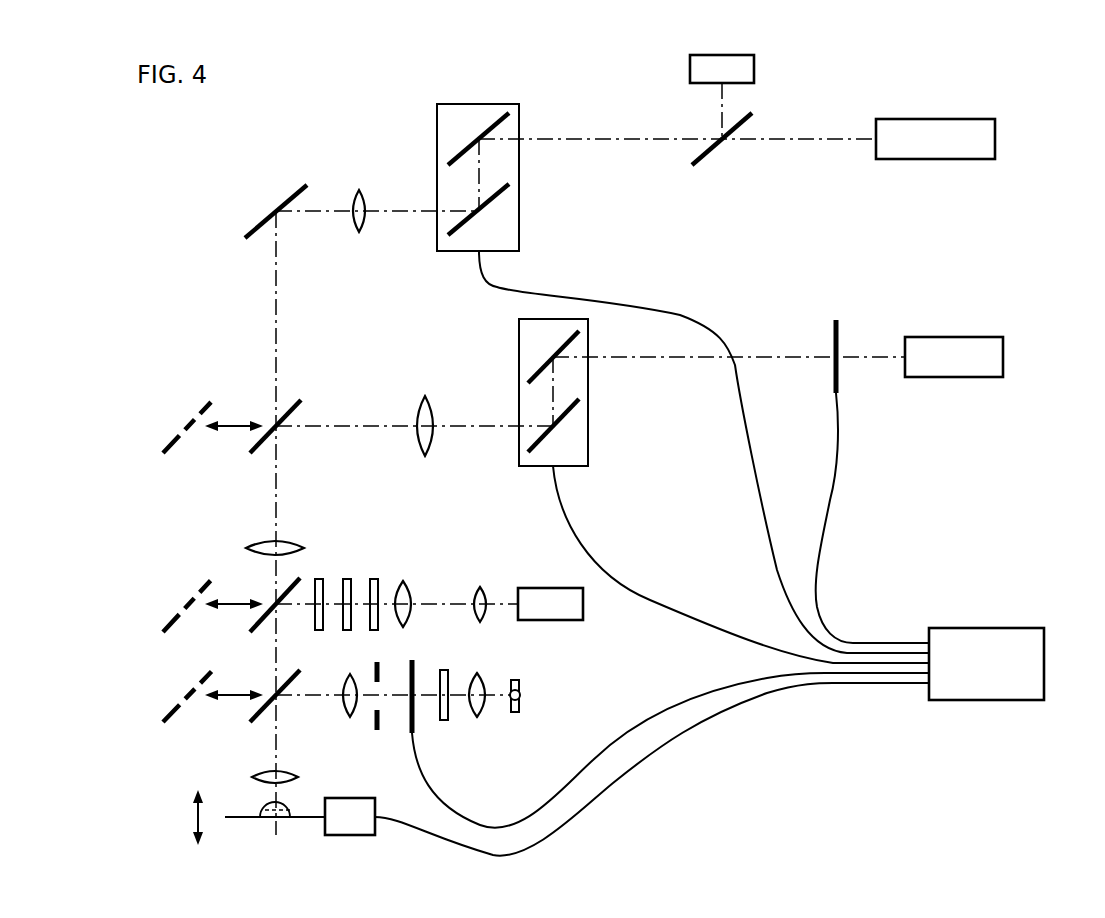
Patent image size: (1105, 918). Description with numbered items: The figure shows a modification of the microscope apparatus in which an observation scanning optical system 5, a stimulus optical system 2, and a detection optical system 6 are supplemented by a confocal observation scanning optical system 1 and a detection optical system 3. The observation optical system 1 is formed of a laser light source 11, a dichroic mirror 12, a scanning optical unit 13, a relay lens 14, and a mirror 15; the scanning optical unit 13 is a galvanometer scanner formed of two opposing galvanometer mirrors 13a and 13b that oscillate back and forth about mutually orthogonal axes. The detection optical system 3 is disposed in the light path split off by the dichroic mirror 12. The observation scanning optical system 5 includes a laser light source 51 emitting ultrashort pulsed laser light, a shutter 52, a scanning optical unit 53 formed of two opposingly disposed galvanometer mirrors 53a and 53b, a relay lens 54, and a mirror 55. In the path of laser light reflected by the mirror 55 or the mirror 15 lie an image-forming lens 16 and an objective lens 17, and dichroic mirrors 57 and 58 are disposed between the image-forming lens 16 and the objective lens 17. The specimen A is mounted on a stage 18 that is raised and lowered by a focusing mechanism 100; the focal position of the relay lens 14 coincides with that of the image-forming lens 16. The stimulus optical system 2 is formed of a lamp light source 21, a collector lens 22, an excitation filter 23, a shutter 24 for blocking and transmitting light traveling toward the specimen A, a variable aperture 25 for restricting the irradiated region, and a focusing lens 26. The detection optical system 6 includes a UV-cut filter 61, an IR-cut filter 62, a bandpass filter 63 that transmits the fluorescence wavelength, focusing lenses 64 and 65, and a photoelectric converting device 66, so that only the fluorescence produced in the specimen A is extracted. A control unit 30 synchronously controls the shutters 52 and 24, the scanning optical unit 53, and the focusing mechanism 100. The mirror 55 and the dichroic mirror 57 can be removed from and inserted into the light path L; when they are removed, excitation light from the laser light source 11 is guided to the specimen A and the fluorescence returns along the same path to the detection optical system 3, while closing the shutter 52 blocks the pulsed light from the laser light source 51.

The observation optical system 1 is at (1010, 85).
The stimulus optical system 2 is at (580, 692).
The detection optical system 3 is at (754, 67).
The observation scanning optical system 5 is at (675, 445).
The detection optical system 6 is at (450, 525).
The laser light source 11 is at (933, 119).
The dichroic mirror 12 is at (708, 157).
The scanning optical unit 13 is at (519, 176).
The galvanometer mirror 13a is at (494, 122).
The galvanometer mirror 13b is at (497, 195).
The relay lens 14 is at (358, 188).
The mirror 15 is at (256, 222).
The image-forming lens 16 is at (257, 542).
The objective lens 17 is at (253, 777).
The stage 18 is at (310, 820).
The lamp light source 21 is at (519, 683).
The collector lens 22 is at (483, 713).
The excitation filter 23 is at (447, 720).
The shutter 24 is at (415, 673).
The variable aperture 25 is at (375, 665).
The focusing lens 26 is at (342, 708).
The control unit 30 is at (985, 628).
The laser light source 51 is at (955, 337).
The shutter 52 is at (840, 322).
The scanning optical unit 53 is at (590, 392).
The galvanometer mirror 53a is at (544, 368).
The galvanometer mirror 53b is at (565, 413).
The relay lens 54 is at (427, 395).
The mirror 55 is at (293, 398).
The dichroic mirror 57 is at (254, 628).
The dichroic mirror 58 is at (252, 720).
The UV-cut filter 61 is at (318, 578).
The IR-cut filter 62 is at (346, 578).
The bandpass filter 63 is at (373, 578).
The focusing lens 64 is at (405, 580).
The focusing lens 65 is at (480, 587).
The photoelectric converting device 66 is at (540, 588).
The focusing mechanism 100 is at (345, 798).
The specimen A is at (265, 808).
The light path L is at (276, 305).